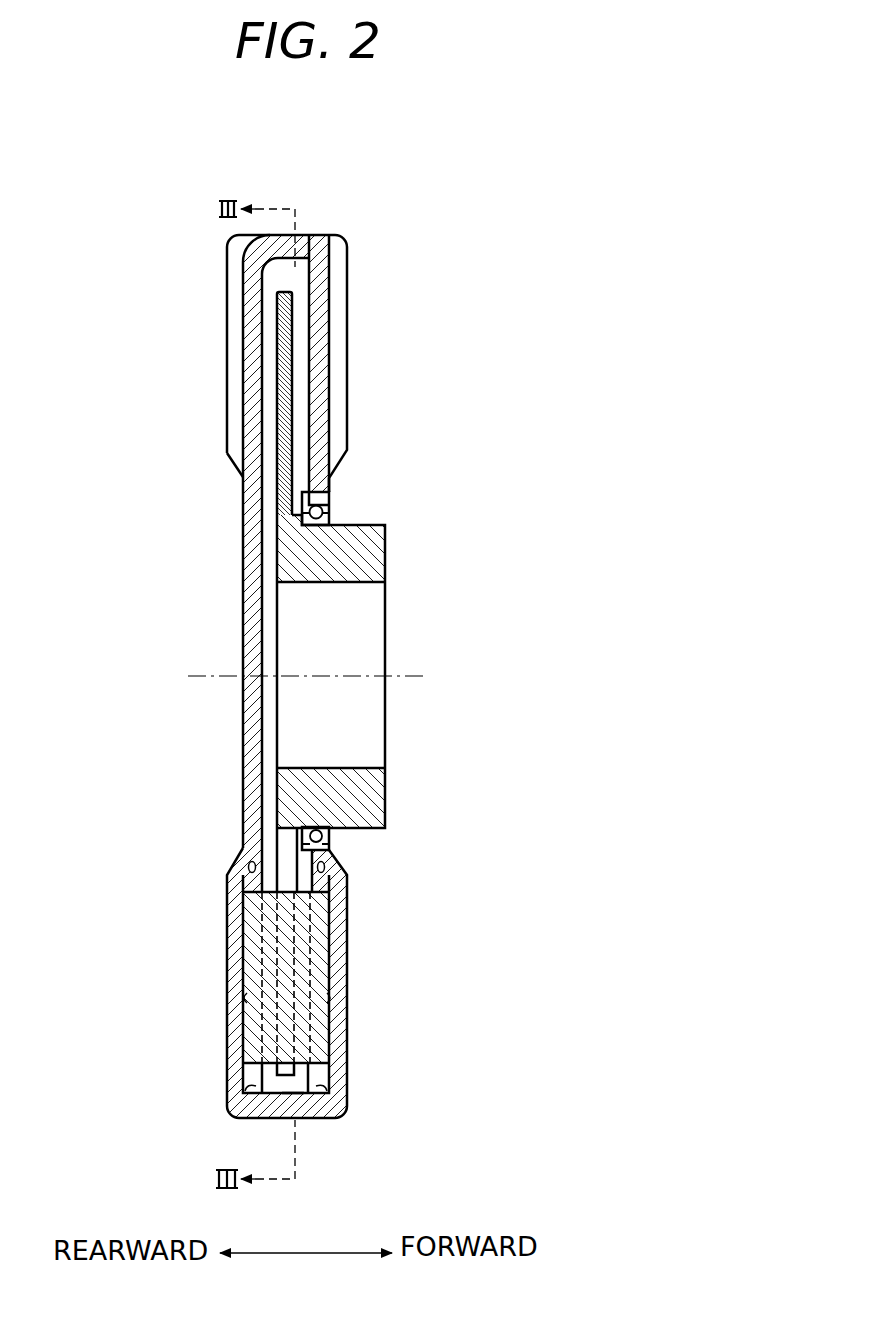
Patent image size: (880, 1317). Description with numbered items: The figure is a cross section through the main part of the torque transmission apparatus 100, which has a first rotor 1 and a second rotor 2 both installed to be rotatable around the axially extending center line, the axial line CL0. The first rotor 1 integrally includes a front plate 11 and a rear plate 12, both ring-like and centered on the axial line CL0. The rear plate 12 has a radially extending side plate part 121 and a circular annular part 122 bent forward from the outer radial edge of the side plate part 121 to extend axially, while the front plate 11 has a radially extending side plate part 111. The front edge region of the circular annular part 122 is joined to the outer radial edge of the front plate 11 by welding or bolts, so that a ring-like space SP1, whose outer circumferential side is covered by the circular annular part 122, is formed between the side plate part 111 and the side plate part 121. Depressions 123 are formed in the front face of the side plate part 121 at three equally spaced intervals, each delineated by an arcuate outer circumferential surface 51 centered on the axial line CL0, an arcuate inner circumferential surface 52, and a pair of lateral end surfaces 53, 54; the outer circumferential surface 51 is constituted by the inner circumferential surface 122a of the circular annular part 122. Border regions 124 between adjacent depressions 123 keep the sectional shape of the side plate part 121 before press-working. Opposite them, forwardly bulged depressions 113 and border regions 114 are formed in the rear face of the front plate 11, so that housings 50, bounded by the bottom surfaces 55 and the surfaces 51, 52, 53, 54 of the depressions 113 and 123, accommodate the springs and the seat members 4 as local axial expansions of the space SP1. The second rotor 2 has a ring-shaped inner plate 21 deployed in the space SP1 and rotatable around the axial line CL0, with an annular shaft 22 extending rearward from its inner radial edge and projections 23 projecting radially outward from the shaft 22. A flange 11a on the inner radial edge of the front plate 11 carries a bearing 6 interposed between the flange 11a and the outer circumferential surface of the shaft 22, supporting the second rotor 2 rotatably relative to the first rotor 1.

The torque transmission apparatus 100 is at (315, 664).
The first rotor 1 is at (284, 668).
The front plate 11 is at (365, 569).
The flange 11a is at (329, 490).
The side plate part of front plate 111 is at (329, 442).
The depressions of front plate 113 is at (320, 886).
The border regions of front plate 114 is at (365, 363).
The rear plate 12 is at (272, 668).
The side plate part of rear plate 121 is at (228, 563).
The circular annular part 122 is at (311, 668).
The inner circumferential surface of circular annular part 122a is at (292, 1088).
The depressions of rear plate 123 is at (253, 886).
The border regions of rear plate 124 is at (243, 363).
The second rotor 2 is at (325, 592).
The inner plate 21 is at (291, 327).
The projections 23 is at (361, 592).
The annular shaft 22 is at (385, 557).
The bearing 6 is at (334, 512).
The seat members 4 is at (317, 953).
The housings 50 is at (289, 995).
The outer circumferential surface 51 is at (250, 1088).
The inner circumferential surface 52 is at (250, 862).
The lateral end surface 53 is at (289, 1056).
The lateral end surface 54 is at (250, 1075).
The bottom surfaces 55 is at (247, 996).
The ring-like space SP1 is at (270, 324).
The axial line CL0 is at (330, 678).